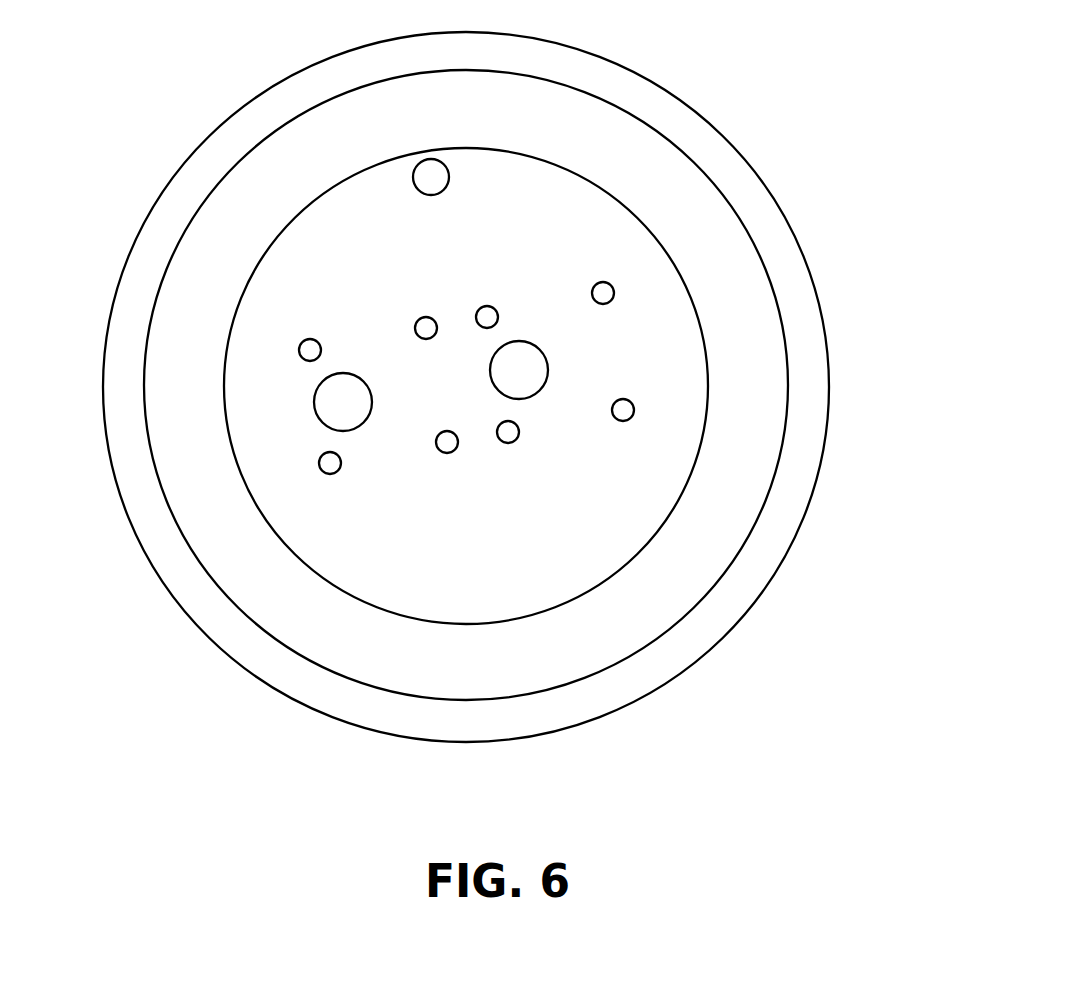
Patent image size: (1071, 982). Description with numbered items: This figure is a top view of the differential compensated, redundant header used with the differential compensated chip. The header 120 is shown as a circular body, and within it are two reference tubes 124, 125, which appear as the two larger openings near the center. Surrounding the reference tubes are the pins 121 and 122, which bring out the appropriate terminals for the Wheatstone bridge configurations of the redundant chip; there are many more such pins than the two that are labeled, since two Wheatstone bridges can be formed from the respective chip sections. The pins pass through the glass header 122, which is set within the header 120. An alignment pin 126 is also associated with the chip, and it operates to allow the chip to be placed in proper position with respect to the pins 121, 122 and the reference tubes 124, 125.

The header 120 is at (642, 452).
The pin 121 is at (632, 400).
The pin / glass header 122 is at (615, 290).
The reference tube 124 is at (313, 412).
The reference tube 125 is at (490, 380).
The alignment pin 126 is at (447, 165).